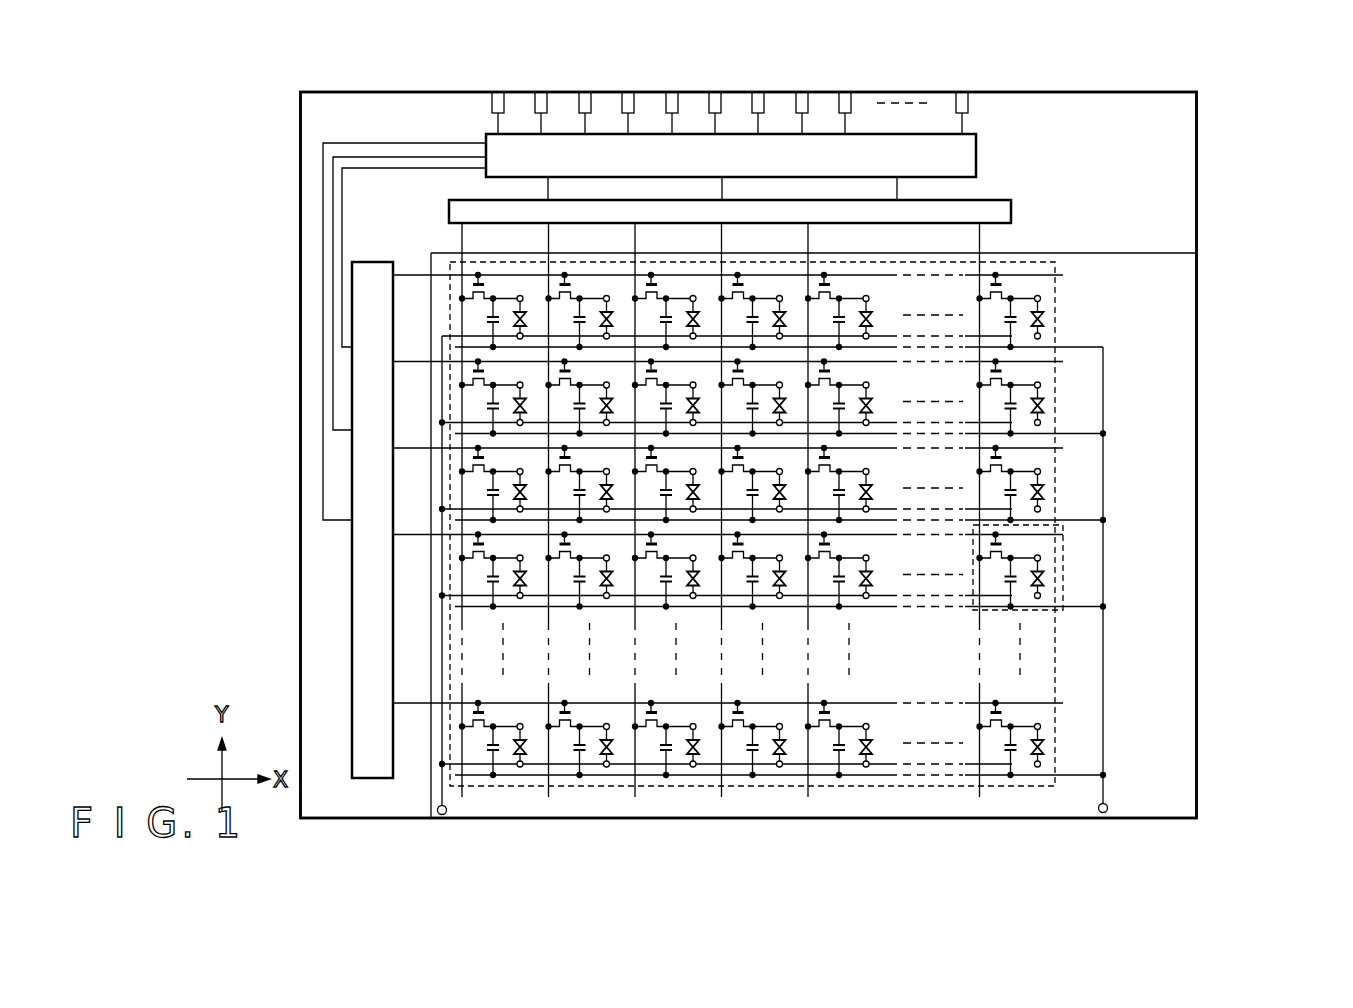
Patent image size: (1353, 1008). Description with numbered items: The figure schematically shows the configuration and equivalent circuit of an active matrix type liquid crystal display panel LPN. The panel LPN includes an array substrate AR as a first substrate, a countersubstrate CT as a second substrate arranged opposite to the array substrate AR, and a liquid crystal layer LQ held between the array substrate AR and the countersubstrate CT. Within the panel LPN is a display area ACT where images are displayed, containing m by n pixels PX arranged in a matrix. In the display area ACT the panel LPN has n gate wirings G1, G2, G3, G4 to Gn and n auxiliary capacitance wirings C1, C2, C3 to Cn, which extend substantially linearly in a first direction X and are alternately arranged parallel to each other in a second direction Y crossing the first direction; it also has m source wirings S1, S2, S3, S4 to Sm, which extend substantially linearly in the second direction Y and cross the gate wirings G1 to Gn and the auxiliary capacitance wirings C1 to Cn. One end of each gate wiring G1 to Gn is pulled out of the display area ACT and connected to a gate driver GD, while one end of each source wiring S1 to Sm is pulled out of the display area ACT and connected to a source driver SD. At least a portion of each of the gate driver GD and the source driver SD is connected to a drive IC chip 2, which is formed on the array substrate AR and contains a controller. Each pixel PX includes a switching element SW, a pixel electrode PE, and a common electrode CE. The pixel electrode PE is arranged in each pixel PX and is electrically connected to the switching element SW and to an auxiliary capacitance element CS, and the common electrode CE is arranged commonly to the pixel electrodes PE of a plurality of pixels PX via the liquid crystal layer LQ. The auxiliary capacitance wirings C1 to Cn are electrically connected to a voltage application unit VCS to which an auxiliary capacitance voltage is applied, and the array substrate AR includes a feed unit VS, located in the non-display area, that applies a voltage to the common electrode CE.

The drive IC chip 2 is at (976, 131).
The liquid crystal display panel LPN is at (1234, 104).
The array substrate AR is at (367, 808).
The countersubstrate CT is at (1163, 253).
The display area ACT is at (1055, 377).
The source driver SD is at (1012, 207).
The gate driver GD is at (349, 634).
The source wiring S1 is at (464, 242).
The source wiring S2 is at (551, 242).
The source wiring S3 is at (637, 242).
The source wiring S4 is at (724, 242).
The source wiring Sm is at (982, 242).
The gate wiring G1 is at (408, 272).
The gate wiring G2 is at (408, 358).
The gate wiring G3 is at (408, 445).
The gate wiring G4 is at (408, 531).
The gate wiring Gn is at (408, 700).
The auxiliary capacitance wiring C1 is at (1080, 346).
The auxiliary capacitance wiring C2 is at (1080, 432).
The auxiliary capacitance wiring C3 is at (1082, 518).
The auxiliary capacitance wiring Cn is at (1082, 773).
The feed unit VS is at (447, 813).
The voltage application unit VCS is at (1108, 806).
The pixel PX is at (1057, 611).
The switching element SW is at (976, 549).
The auxiliary capacitance element CS is at (992, 579).
The pixel electrode PE is at (1041, 556).
The liquid crystal layer LQ is at (1044, 574).
The common electrode CE is at (1041, 593).